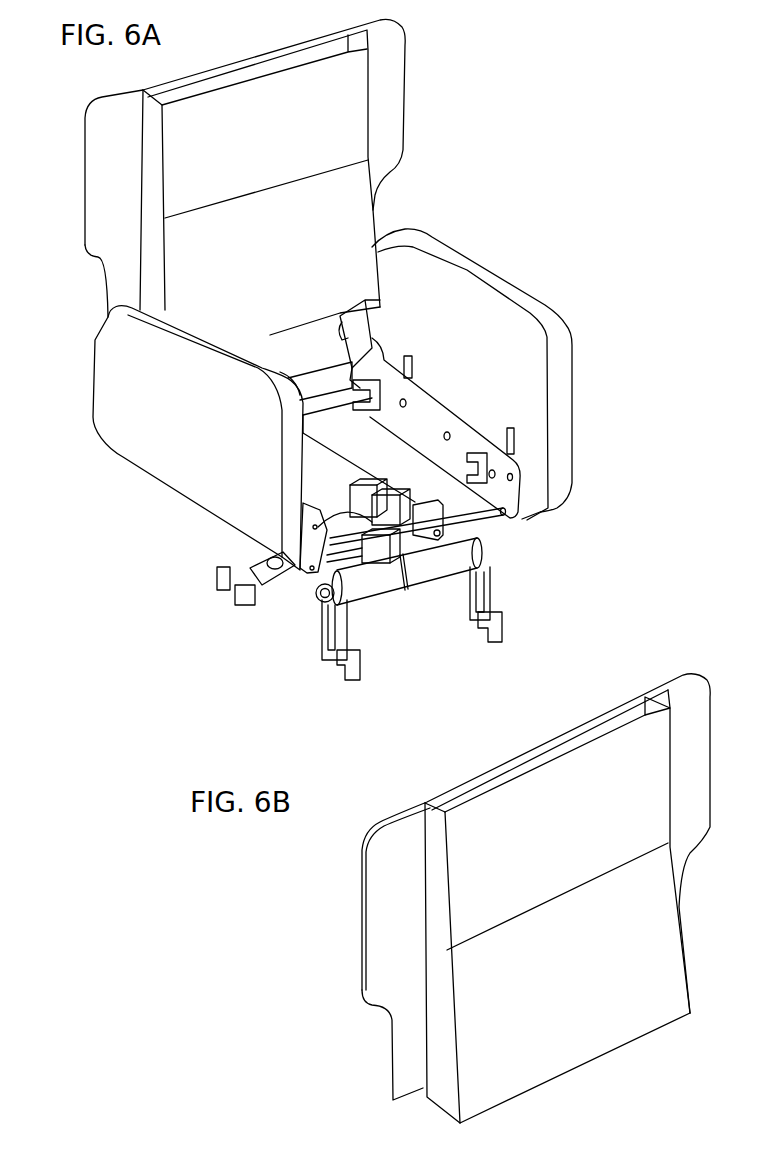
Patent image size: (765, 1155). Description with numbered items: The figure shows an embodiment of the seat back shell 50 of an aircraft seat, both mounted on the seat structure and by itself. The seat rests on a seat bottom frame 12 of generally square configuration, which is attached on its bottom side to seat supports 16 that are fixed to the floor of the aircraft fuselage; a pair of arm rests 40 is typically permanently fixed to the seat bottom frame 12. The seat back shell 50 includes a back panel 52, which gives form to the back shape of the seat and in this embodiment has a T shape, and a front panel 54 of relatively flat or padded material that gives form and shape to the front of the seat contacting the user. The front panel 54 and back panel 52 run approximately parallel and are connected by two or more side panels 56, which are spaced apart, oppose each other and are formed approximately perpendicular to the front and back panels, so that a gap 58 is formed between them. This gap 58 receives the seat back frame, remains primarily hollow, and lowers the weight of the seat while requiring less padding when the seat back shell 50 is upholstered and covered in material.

In FIG. 6A, the seat bottom frame 12 is at (520, 503).
In FIG. 6A, the seat supports 16 is at (240, 585).
In FIG. 6A, the arm rests 40 is at (123, 336).
In FIG. 6A, the seat back shell 50 is at (423, 57).
In FIG. 6B, the seat back shell 50 is at (325, 910).
In FIG. 6B, the back panel 52 is at (378, 827).
In FIG. 6B, the front panel 54 is at (636, 1040).
In FIG. 6B, the side panels 56 is at (432, 830).
In FIG. 6B, the gap 58 is at (548, 755).